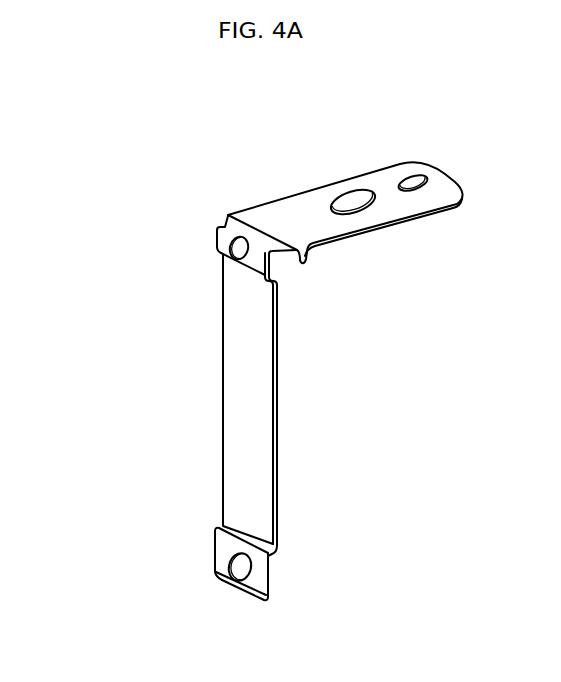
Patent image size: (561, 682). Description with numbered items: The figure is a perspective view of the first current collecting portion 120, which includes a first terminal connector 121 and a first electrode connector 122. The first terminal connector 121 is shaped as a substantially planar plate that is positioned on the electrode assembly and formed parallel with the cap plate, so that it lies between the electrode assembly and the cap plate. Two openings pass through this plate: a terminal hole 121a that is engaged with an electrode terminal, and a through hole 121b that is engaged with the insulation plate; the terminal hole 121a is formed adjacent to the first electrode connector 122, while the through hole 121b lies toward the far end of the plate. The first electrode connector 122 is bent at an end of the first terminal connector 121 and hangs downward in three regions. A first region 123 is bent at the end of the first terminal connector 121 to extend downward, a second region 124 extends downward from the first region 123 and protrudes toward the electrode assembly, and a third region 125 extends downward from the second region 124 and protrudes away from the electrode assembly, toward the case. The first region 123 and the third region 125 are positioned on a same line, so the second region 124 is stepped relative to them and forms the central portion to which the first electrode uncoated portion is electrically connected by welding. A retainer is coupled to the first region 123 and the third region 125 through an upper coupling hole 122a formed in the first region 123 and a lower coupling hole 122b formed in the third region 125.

The first current collecting portion 120 is at (85, 110).
The first terminal connector 121 is at (275, 203).
The terminal hole 121a is at (355, 193).
The through hole 121b is at (408, 180).
The first electrode connector 122 is at (131, 307).
The upper coupling hole 122a is at (244, 237).
The lower coupling hole 122b is at (247, 583).
The first region 123 is at (224, 250).
The second region 124 is at (233, 392).
The third region 125 is at (225, 543).